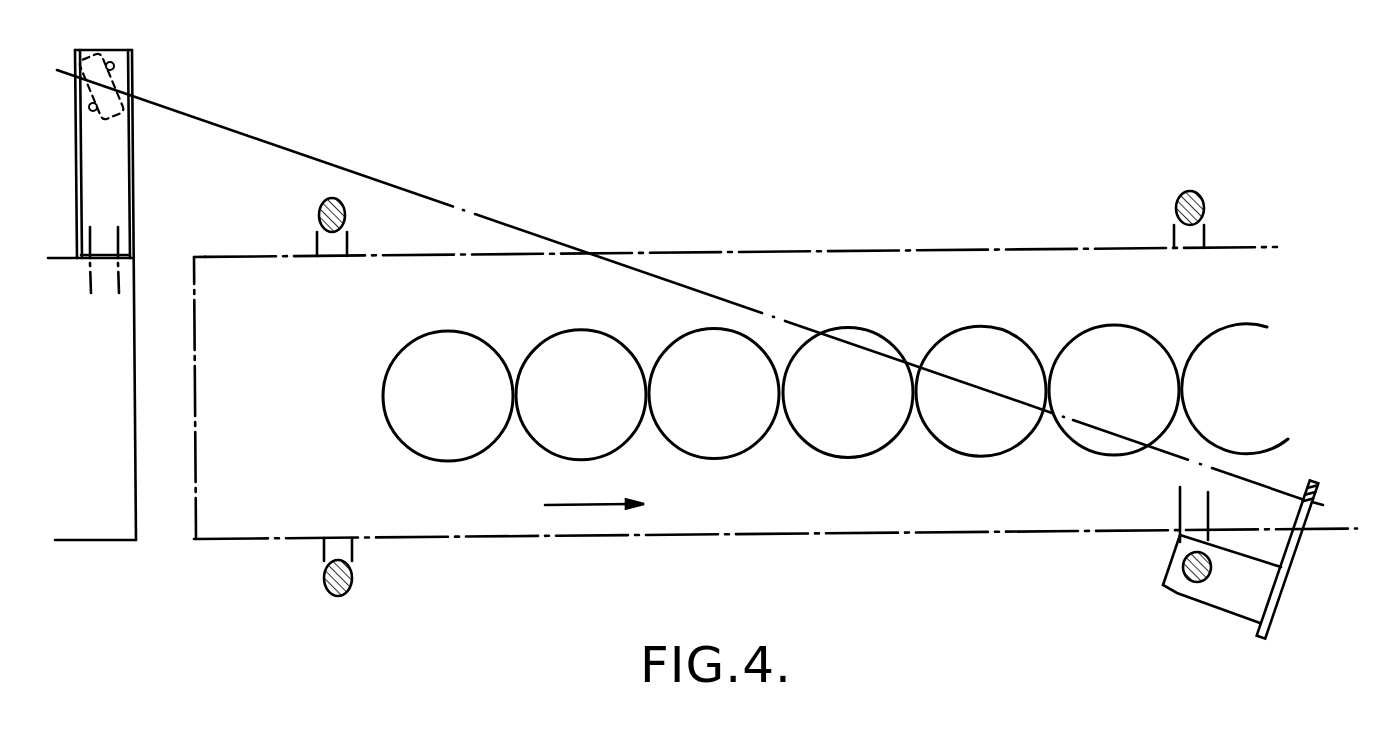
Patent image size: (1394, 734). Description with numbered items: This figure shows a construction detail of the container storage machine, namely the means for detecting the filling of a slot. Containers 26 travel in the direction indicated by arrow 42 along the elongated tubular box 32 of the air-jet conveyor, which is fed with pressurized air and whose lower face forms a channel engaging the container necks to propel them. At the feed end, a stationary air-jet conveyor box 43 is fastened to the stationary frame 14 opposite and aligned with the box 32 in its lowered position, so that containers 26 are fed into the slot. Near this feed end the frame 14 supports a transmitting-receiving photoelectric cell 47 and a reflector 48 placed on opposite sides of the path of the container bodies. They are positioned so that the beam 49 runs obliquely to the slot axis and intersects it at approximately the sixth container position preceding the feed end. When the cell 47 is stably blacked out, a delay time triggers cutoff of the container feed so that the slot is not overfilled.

The stationary frame 14 is at (1172, 592).
The containers 26 is at (945, 335).
The tubular case or box 32 is at (720, 250).
The arrow 42 is at (595, 505).
The stationary air-jet conveyor box 43 is at (100, 543).
The transmitting-receiving photoelectric cell 47 is at (1312, 522).
The reflector 48 is at (140, 72).
The beam 49 is at (475, 212).